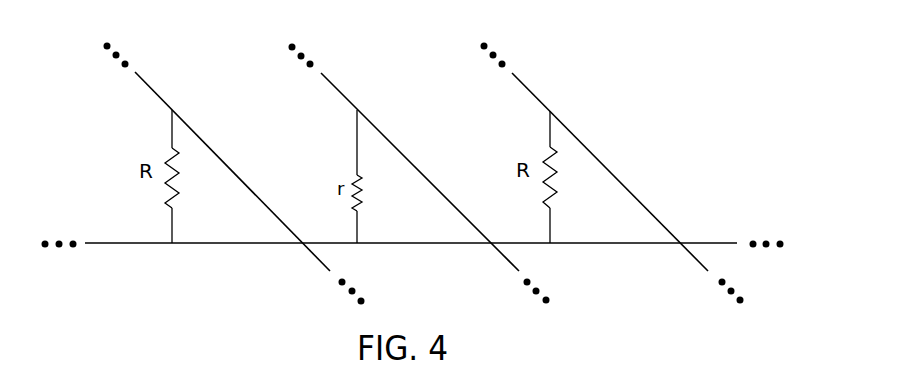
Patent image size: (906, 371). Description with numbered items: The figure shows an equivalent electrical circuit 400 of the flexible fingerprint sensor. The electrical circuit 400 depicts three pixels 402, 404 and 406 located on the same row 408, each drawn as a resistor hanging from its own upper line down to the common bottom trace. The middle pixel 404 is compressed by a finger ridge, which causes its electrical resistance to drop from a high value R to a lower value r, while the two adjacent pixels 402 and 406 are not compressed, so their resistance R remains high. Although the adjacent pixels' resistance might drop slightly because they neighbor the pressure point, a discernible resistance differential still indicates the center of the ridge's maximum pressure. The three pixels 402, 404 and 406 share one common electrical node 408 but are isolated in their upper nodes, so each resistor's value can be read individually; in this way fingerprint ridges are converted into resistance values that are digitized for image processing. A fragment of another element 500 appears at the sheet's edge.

The equivalent electrical circuit 400 is at (680, 51).
The pixel 402 is at (150, 86).
The middle pixel 404 is at (335, 87).
The pixel 406 is at (528, 87).
The row 408 is at (112, 243).
The circuit of FIG. 5 500 is at (697, 370).